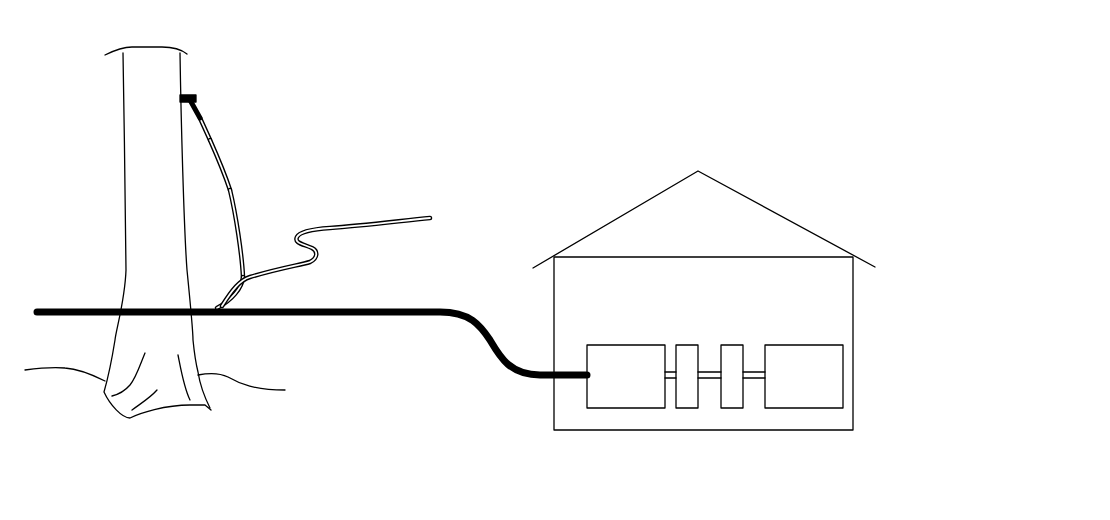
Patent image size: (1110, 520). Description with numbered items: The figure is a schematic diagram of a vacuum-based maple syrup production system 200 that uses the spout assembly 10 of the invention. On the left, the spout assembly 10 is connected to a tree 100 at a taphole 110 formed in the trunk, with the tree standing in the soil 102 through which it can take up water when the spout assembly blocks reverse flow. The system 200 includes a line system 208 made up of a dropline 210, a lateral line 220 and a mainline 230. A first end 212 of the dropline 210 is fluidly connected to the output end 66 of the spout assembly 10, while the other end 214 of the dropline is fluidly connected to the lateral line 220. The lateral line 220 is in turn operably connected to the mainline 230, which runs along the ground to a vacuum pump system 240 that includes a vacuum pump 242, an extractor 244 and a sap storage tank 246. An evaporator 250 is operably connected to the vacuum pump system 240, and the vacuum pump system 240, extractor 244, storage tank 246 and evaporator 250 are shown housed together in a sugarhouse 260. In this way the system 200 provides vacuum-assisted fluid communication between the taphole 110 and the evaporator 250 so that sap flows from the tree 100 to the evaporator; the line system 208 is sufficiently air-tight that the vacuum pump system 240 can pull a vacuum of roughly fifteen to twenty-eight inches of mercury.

The maple syrup production system 200 is at (690, 48).
The tree 100 is at (123, 124).
The soil 102 is at (155, 400).
The taphole 110 is at (186, 85).
The spout assembly 10 is at (198, 96).
The output end 66 is at (200, 116).
The line system 208 is at (414, 146).
The first end 212 is at (213, 124).
The dropline 210 is at (227, 173).
The other end 214 is at (242, 270).
The lateral line 220 is at (357, 228).
The mainline 230 is at (392, 305).
The sugarhouse 260 is at (758, 189).
The vacuum pump system 240 is at (743, 332).
The vacuum pump 242 is at (626, 376).
The extractor 244 is at (688, 409).
The sap storage tank 246 is at (730, 409).
The evaporator 250 is at (793, 376).